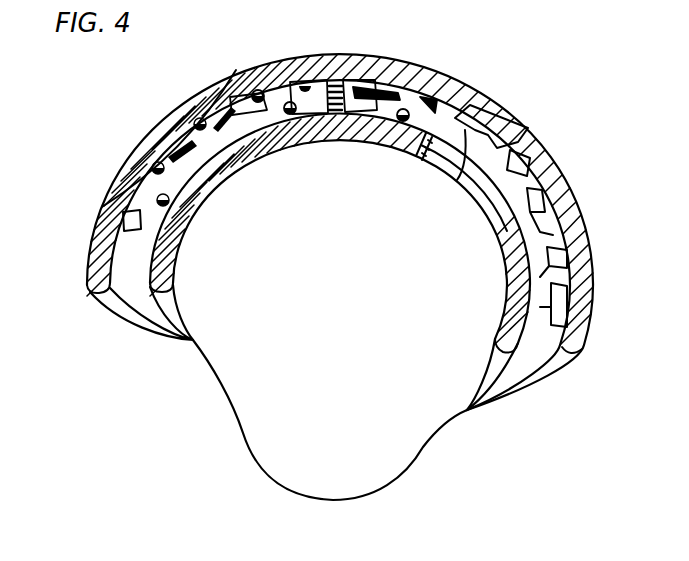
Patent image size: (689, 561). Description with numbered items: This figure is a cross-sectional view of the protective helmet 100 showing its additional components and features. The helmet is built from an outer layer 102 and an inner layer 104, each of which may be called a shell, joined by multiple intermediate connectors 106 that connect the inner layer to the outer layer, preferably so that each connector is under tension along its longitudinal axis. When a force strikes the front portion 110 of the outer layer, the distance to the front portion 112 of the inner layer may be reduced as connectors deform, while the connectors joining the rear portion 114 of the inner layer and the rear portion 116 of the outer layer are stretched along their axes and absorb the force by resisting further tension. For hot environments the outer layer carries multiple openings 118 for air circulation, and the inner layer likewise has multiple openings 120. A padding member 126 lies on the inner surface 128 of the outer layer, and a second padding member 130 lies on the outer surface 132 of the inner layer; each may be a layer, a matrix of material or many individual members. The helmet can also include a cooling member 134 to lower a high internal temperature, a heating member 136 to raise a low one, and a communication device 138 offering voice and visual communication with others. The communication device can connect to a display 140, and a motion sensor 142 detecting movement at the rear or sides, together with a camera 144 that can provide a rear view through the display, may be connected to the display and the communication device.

The protective helmet 100 is at (108, 131).
The outer layer 102 is at (133, 150).
The inner layer 104 is at (210, 181).
The intermediate connectors 106 is at (187, 147).
The front portion of outer layer 110 is at (106, 316).
The front portion of inner layer 112 is at (190, 290).
The rear portion of inner layer 114 is at (512, 257).
The rear portion of outer layer 116 is at (587, 285).
The openings 118 is at (452, 92).
The openings 120 is at (427, 137).
The padding member 126 is at (178, 188).
The inner surface 128 is at (150, 268).
The padding member 130 is at (157, 197).
The outer surface 132 is at (123, 227).
The cooling member 134 is at (457, 180).
The heating member 136 is at (507, 230).
The communication device 138 is at (562, 307).
The display 140 is at (157, 231).
The motion sensor 142 is at (513, 167).
The camera 144 is at (540, 277).